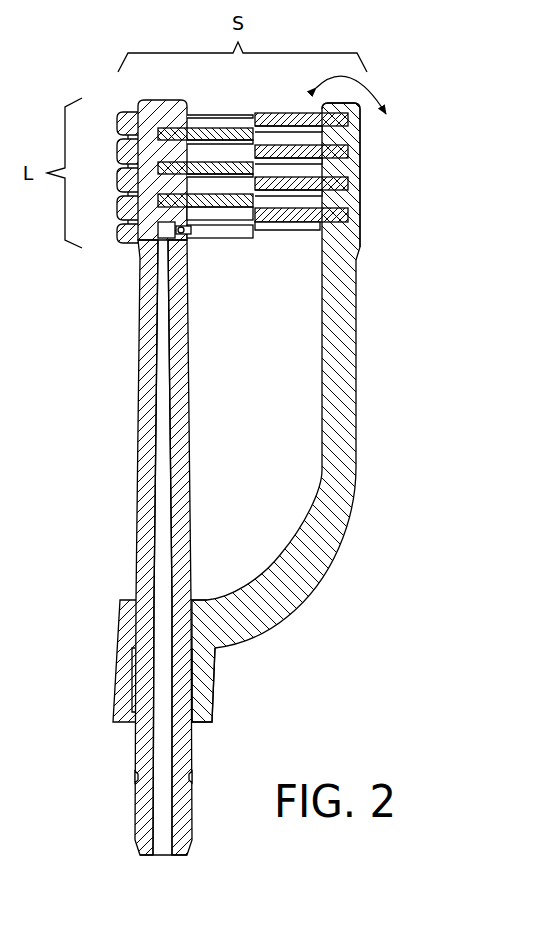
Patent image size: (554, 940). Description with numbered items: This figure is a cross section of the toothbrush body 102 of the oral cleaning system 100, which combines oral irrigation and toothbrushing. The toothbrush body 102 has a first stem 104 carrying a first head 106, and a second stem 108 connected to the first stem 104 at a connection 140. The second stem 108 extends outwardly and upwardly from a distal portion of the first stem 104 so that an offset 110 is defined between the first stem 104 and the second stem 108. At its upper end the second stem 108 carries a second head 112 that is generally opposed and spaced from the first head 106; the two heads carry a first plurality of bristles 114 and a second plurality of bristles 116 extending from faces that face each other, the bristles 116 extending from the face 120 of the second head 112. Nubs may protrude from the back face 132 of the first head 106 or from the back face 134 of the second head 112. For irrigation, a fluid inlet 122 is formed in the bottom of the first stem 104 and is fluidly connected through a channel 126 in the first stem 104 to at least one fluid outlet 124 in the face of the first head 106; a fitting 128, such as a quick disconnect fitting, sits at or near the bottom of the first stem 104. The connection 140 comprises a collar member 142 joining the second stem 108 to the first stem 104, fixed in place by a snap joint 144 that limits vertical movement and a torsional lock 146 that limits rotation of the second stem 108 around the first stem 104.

The oral cleaning system 100 is at (236, 473).
The toothbrush body 102 is at (104, 571).
The first stem 104 is at (134, 503).
The first head 106 is at (128, 101).
The second stem 108 is at (359, 357).
The offset 110 is at (307, 254).
The second head 112 is at (364, 163).
The first plurality of bristles 114 is at (237, 243).
The second plurality of bristles 116 is at (290, 238).
The face 120 is at (302, 116).
The fluid inlet 122 is at (158, 857).
The fluid outlet 124 is at (188, 240).
The channel 126 is at (152, 552).
The fitting 128 is at (137, 777).
The back face 132 is at (115, 188).
The back face 134 is at (360, 188).
The connection 140 is at (205, 596).
The collar member 142 is at (217, 697).
The snap joint 144 is at (133, 698).
The torsional lock 146 is at (132, 618).